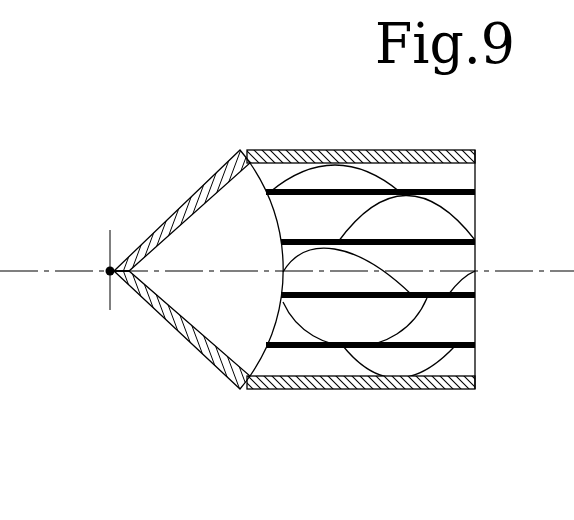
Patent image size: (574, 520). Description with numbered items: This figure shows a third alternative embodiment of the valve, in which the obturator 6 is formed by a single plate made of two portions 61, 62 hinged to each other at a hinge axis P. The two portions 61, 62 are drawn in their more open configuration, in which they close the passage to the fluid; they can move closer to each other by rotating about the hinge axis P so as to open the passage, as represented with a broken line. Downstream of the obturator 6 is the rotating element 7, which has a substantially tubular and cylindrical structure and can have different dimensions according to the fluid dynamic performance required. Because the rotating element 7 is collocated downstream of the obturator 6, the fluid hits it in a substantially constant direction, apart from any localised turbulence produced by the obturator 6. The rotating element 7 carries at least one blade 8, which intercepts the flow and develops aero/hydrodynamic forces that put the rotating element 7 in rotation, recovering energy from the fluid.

The obturator 6 is at (147, 225).
The portion of the obturator plate 61 is at (212, 180).
The portion of the obturator plate 62 is at (170, 327).
The rotating element 7 is at (455, 360).
The blade 8 is at (400, 360).
The hinge axis P is at (107, 276).